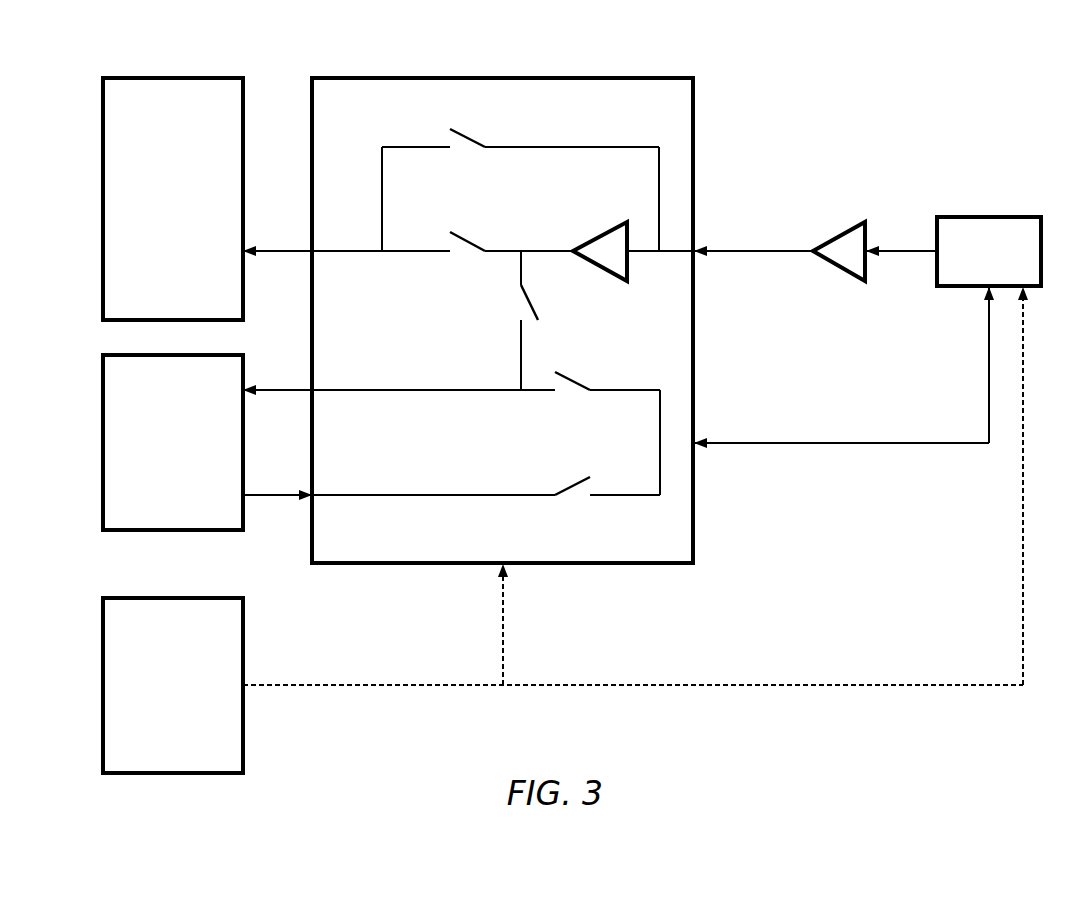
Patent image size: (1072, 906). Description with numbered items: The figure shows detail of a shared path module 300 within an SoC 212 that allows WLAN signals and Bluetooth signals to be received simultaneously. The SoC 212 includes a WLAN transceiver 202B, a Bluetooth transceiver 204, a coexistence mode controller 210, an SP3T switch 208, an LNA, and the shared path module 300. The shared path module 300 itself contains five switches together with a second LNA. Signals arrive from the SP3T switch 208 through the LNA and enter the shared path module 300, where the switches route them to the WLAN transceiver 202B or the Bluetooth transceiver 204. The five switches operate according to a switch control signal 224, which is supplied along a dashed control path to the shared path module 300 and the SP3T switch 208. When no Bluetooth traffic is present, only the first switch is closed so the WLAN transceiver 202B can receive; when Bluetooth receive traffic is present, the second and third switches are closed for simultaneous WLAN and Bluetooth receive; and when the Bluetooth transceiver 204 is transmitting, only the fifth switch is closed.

The shared path module 300 is at (520, 77).
The WLAN transceiver 202B is at (151, 231).
The Bluetooth transceiver 204 is at (157, 476).
The coexistence mode controller 210 is at (157, 730).
The SP3T switch 208 is at (973, 271).
The SoC 212 is at (955, 108).
The switch control signal 224 is at (415, 683).